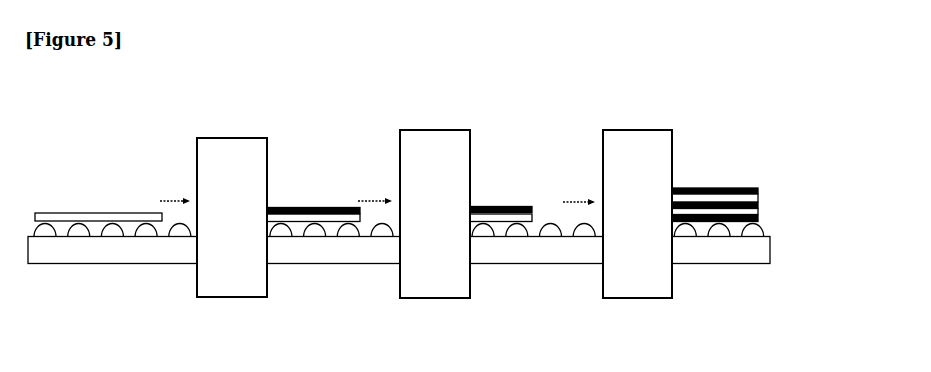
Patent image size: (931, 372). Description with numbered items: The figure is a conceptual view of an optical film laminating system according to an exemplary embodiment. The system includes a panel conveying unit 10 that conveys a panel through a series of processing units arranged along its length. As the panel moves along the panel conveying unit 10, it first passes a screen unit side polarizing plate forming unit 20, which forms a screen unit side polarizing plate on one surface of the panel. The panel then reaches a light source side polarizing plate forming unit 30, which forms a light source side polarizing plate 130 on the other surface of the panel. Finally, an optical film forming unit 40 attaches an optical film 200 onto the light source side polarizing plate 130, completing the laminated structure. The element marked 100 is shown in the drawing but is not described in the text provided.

The panel conveying unit 10 is at (82, 256).
The screen unit side polarizing plate forming unit 20 is at (245, 138).
The light source side polarizing plate forming unit 30 is at (452, 129).
The optical film forming unit 40 is at (652, 130).
The unit cell 100 is at (518, 173).
The light source side polarizing plate 130 is at (497, 225).
The optical film 200 is at (715, 230).